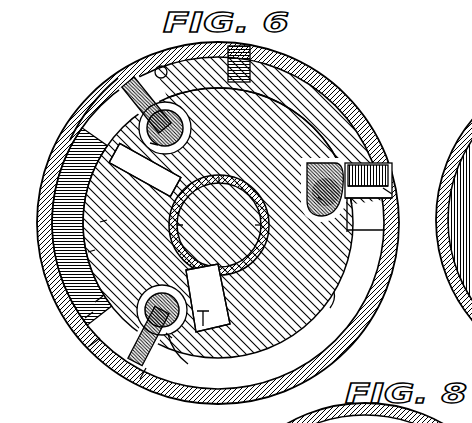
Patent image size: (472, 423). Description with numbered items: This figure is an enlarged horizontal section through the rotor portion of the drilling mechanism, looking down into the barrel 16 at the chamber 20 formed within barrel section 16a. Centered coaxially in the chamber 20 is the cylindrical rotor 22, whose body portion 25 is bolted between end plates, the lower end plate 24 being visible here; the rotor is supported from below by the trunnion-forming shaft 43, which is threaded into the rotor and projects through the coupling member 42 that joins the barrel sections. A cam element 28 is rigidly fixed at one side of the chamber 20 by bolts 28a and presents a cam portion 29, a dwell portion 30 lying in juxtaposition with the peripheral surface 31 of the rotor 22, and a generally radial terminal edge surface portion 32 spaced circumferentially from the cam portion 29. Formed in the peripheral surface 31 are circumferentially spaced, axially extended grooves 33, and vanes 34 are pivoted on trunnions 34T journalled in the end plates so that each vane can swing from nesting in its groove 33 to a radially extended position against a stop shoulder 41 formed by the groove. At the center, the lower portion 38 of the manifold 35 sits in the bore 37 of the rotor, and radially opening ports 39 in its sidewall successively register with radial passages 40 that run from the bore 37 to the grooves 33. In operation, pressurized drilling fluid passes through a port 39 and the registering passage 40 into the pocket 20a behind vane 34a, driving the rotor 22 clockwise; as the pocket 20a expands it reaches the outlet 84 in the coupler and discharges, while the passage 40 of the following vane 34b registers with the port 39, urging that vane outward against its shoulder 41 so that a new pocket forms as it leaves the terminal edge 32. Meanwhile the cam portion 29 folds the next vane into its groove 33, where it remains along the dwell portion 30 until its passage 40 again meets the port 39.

In FIG. 6, the barrel 16 is at (351, 95).
In FIG. 6, the barrel section 16a is at (83, 118).
In FIG. 6, the chamber 20 is at (95, 302).
In FIG. 6, the pocket 20a is at (338, 327).
In FIG. 6, the rotor 22 is at (88, 252).
In FIG. 6, the lower end plate 24 is at (186, 359).
In FIG. 6, the body portion 25 is at (100, 222).
In FIG. 6, the cam element 28 is at (305, 95).
In FIG. 6, the bolts 28a is at (424, 145).
In FIG. 6, the cam portion 29 is at (160, 66).
In FIG. 6, the dwell portion 30 is at (336, 118).
In FIG. 6, the peripheral surface 31 is at (330, 308).
In FIG. 6, the terminal edge surface portion 32 is at (378, 262).
In FIG. 6, the grooves 33 is at (403, 200).
In FIG. 6, the vanes 34 is at (145, 82).
In FIG. 6, the trunnions 34T is at (202, 351).
In FIG. 6, the vane 34a is at (140, 379).
In FIG. 6, the vane 34b is at (383, 188).
In FIG. 6, the manifold 35 is at (222, 186).
In FIG. 6, the bore 37 is at (212, 230).
In FIG. 6, the lower portion of manifold 38 is at (170, 227).
In FIG. 6, the ports 39 is at (256, 233).
In FIG. 6, the radial passages 40 is at (241, 207).
In FIG. 6, the stop shoulders 41 is at (150, 116).
In FIG. 6, the coupling member 42 is at (88, 347).
In FIG. 6, the trunnion-forming shaft 43 is at (174, 184).
In FIG. 6, the outlet 84 is at (85, 318).
In FIG. 8, the outlet 84 is at (463, 315).